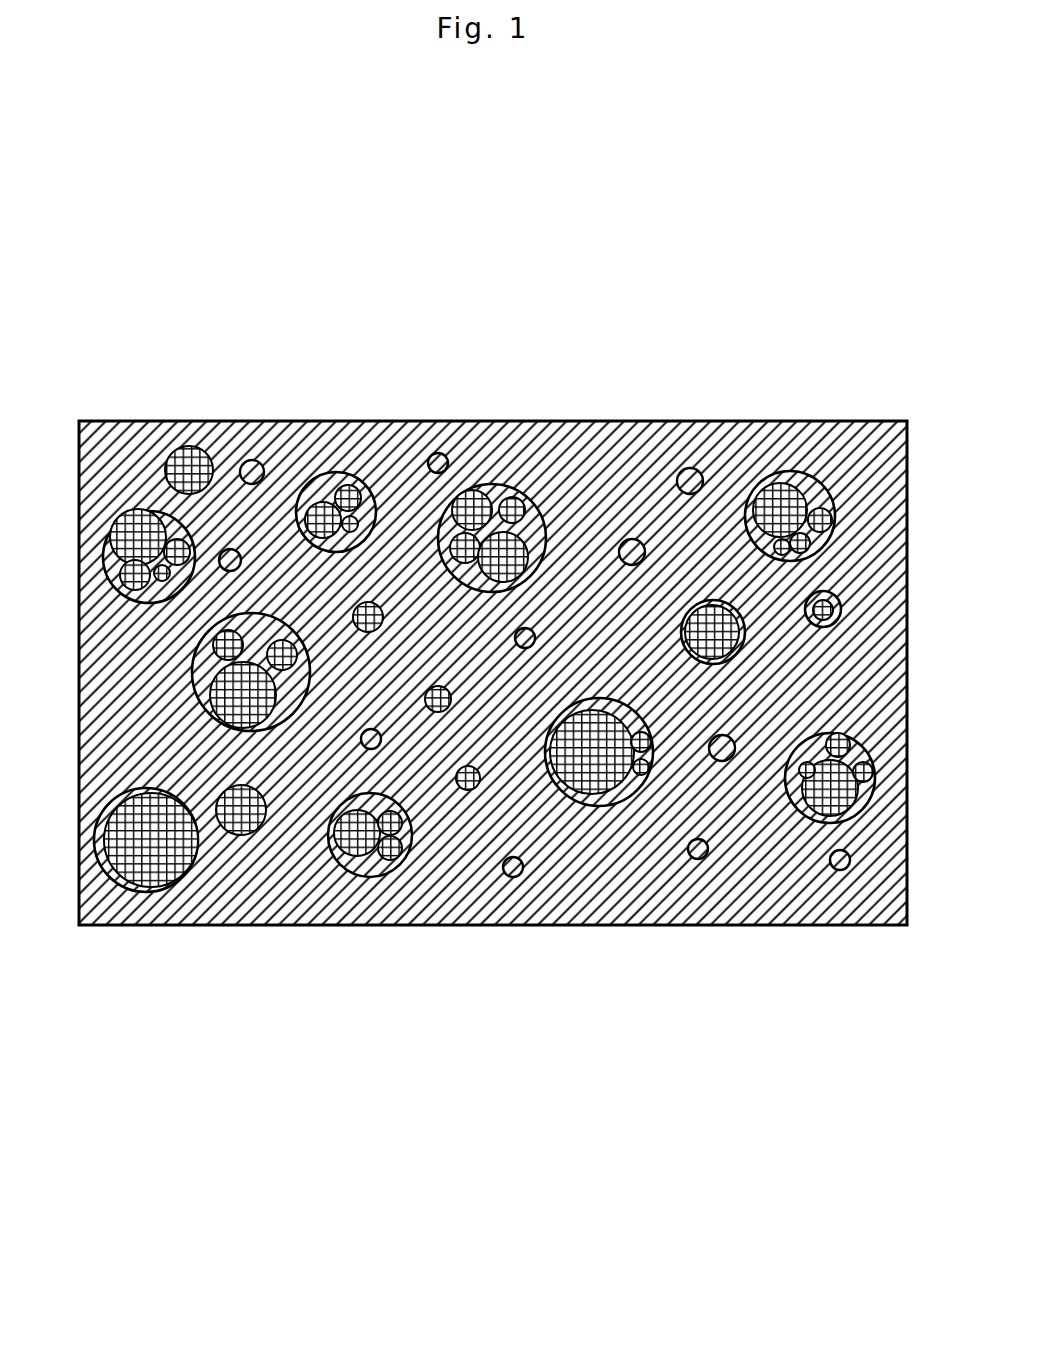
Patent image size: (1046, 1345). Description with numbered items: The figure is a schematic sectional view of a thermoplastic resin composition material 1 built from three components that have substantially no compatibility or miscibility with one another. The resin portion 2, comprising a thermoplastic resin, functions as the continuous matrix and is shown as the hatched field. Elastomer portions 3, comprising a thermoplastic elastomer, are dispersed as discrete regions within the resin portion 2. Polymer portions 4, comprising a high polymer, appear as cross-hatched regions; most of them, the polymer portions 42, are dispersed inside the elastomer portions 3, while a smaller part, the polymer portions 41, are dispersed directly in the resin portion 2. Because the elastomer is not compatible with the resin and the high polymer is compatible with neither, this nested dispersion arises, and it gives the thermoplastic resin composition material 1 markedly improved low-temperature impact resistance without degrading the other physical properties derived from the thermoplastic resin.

The thermoplastic resin composition material 1 is at (495, 718).
The resin portion (a) 2 is at (587, 890).
The elastomer portions (b) 3 is at (487, 485).
The polymer portions (c) 4 is at (306, 1026).
The polymer portions (c) dispersed in the resin portion 41 is at (245, 830).
The polymer portions (c) dispersed in the elastomer portions 42 is at (149, 875).